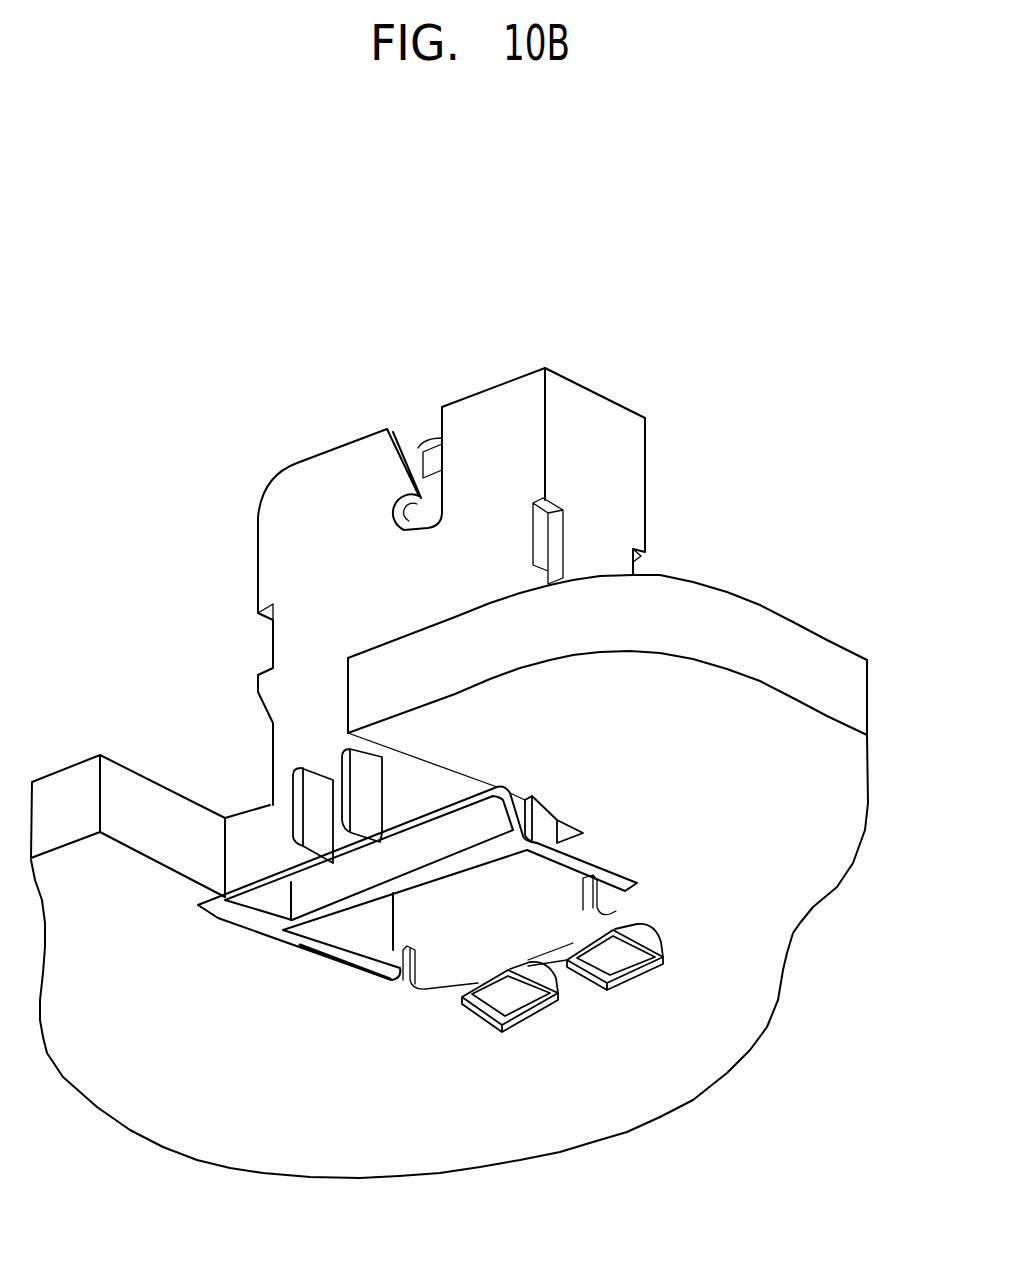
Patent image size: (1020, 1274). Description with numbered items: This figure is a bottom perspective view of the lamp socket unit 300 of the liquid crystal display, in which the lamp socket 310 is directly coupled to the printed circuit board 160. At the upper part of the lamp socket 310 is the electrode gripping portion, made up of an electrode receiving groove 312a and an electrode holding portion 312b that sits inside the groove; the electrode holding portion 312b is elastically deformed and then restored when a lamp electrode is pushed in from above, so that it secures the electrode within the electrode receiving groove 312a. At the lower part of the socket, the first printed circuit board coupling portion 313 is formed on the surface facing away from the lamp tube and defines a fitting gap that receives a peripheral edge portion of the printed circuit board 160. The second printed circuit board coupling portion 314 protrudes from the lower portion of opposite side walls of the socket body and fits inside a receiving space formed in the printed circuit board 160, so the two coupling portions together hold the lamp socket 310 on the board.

The lamp socket unit 300 is at (492, 241).
The lamp socket 310 is at (637, 468).
The electrode receiving groove 312a is at (387, 503).
The electrode holding portion 312b is at (420, 475).
The first printed circuit board coupling portion 313 is at (287, 842).
The second printed circuit board coupling portion 314 is at (266, 916).
The printed circuit board 160 is at (755, 755).